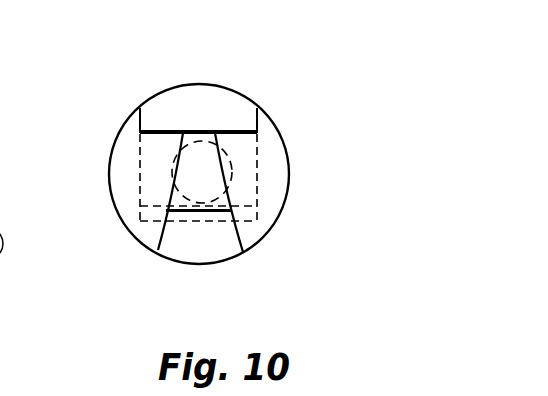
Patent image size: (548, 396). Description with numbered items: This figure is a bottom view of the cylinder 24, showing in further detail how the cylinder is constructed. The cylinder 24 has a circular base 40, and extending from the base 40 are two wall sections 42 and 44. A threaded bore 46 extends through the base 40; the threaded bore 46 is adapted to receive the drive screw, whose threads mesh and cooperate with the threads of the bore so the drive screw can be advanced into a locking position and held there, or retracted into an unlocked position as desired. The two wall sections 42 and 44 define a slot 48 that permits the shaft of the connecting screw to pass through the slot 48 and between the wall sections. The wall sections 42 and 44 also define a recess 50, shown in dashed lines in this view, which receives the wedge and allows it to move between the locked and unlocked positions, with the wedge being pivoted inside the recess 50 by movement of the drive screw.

The cylinder 24 is at (277, 73).
The circular base 40 is at (202, 248).
The wall section 42 is at (275, 188).
The wall section 44 is at (128, 173).
The threaded bore 46 is at (202, 158).
The slot 48 is at (187, 232).
The recess 50 is at (245, 160).